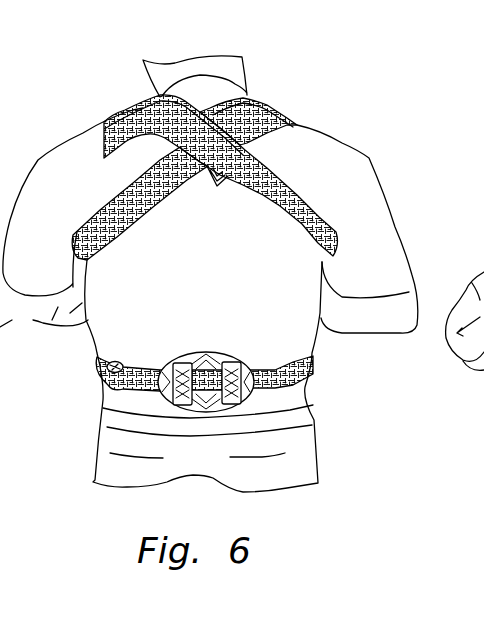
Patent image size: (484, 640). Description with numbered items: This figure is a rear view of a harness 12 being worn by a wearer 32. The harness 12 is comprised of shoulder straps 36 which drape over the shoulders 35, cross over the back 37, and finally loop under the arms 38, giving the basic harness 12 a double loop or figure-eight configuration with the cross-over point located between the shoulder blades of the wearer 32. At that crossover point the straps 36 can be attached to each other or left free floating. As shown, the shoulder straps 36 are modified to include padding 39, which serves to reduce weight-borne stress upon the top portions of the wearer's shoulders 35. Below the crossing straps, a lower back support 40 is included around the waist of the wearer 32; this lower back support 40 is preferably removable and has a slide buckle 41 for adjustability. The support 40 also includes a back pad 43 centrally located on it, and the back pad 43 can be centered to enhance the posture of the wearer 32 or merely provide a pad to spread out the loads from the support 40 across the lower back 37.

The harness 12 is at (283, 80).
The wearer 32 is at (141, 79).
The shoulders 35 is at (68, 151).
The shoulder straps 36 is at (117, 239).
The back 37 is at (229, 226).
The arms 38 is at (372, 222).
The padding 39 is at (285, 120).
The lower back support 40 is at (292, 363).
The slide buckle 41 is at (116, 362).
The back pad 43 is at (206, 352).